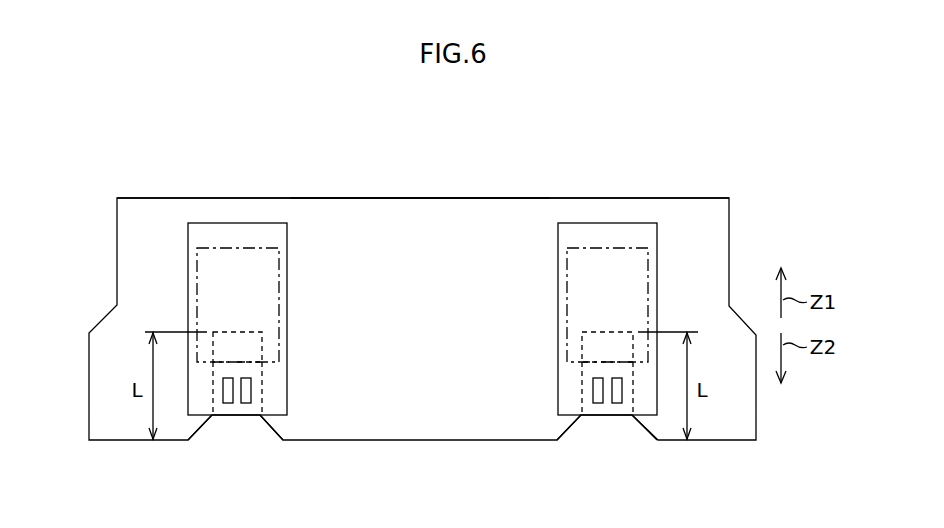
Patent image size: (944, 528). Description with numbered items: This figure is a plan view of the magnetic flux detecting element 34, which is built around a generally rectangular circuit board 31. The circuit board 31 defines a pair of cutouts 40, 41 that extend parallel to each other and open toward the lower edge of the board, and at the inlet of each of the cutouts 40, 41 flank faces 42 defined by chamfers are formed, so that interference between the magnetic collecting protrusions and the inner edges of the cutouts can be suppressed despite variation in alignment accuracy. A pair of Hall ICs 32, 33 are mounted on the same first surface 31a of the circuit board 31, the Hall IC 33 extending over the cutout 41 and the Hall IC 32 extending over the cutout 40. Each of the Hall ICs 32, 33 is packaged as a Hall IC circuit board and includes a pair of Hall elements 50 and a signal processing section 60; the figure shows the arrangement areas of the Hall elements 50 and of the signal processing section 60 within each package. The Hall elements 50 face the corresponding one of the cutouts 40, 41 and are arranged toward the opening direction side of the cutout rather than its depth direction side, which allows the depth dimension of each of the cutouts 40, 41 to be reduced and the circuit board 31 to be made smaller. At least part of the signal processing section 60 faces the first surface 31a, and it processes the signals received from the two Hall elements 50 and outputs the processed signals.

The circuit board 31 is at (362, 197).
The first surface 31a is at (414, 225).
The Hall IC 32 is at (608, 222).
The Hall IC 33 is at (236, 222).
The magnetic flux detecting element 34 is at (478, 178).
The cutout 40 is at (582, 350).
The cutout 41 is at (262, 350).
The flank face 42 is at (208, 421).
The Hall element 50 is at (228, 403).
The signal processing section 60 is at (279, 258).